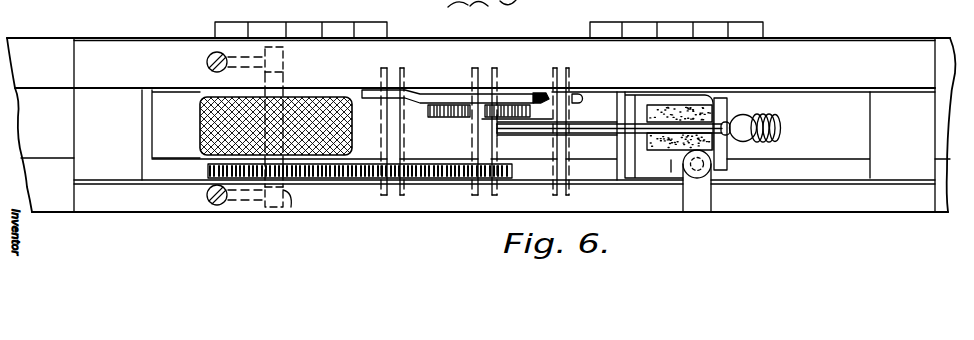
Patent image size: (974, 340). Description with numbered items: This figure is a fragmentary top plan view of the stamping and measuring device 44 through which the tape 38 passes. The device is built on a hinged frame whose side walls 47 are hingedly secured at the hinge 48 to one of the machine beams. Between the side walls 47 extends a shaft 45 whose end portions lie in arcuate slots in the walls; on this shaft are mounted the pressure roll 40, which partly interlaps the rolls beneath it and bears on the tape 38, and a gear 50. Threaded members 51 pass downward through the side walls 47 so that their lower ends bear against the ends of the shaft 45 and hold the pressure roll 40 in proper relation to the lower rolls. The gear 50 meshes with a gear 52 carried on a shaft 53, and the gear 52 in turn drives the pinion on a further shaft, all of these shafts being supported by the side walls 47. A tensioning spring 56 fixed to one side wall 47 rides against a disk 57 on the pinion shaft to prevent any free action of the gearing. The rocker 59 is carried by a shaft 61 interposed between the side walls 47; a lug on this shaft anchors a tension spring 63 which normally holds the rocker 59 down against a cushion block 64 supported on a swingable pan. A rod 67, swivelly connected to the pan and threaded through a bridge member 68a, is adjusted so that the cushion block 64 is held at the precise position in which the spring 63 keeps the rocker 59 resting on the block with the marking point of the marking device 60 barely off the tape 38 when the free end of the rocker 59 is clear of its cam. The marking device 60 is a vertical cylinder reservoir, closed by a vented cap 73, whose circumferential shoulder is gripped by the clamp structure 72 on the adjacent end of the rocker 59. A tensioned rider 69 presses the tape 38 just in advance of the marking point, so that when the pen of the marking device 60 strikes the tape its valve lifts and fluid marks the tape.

The tape 38 is at (42, 97).
The pressure roll 40 is at (328, 102).
The stamping and measuring device 44 is at (348, 203).
The shaft 45 is at (290, 212).
The side walls 47 is at (427, 45).
The hinge 48 is at (284, 21).
The gear 50 is at (251, 178).
The threaded members 51 is at (206, 62).
The gear 52 is at (428, 178).
The shaft 53 is at (397, 135).
The tensioning spring 56 is at (450, 96).
The disk 57 is at (508, 103).
The rocker 59 is at (640, 125).
The marking device 60 is at (788, 125).
The shaft 61 is at (574, 107).
The tension spring 63 is at (538, 96).
The cushion block 64 is at (660, 115).
The rod 67 is at (703, 174).
The lever arm 68a is at (697, 202).
The tensioned rider 69 is at (618, 147).
The clamp structure 72 is at (769, 140).
The vented cap 73 is at (758, 115).